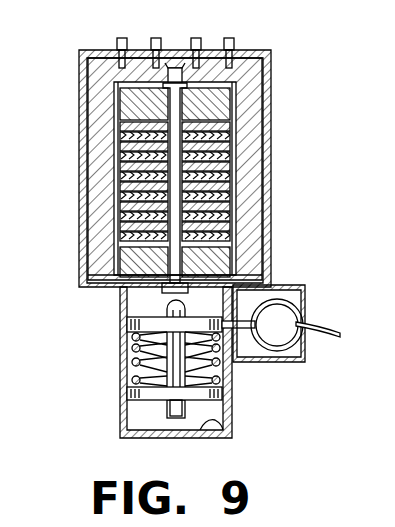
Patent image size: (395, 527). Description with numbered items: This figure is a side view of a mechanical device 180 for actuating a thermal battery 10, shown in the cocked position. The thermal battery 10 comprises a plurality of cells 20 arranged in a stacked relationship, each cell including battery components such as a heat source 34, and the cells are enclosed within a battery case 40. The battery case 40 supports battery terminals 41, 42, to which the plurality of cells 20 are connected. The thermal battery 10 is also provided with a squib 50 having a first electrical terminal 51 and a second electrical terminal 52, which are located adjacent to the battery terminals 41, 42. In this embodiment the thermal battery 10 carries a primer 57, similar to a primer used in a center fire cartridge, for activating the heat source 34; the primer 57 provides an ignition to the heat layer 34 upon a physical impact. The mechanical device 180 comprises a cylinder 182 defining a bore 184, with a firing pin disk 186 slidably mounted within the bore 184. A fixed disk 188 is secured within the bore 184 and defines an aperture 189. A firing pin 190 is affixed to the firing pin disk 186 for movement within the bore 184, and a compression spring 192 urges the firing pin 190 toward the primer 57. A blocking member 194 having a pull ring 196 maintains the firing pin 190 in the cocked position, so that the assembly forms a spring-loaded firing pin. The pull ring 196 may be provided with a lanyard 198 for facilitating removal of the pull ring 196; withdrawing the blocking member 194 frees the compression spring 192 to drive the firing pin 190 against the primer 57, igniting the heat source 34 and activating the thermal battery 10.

The thermal battery 10 is at (80, 63).
The plurality of cells 20 is at (78, 121).
The heat source 34 is at (78, 173).
The battery case 40 is at (82, 273).
The battery terminal 41 is at (231, 40).
The battery terminal 42 is at (121, 40).
The squib 50 is at (175, 63).
The first electrical terminal 51 is at (155, 40).
The second electrical terminal 52 is at (197, 40).
The primer 57 is at (168, 284).
The mechanical device 180 is at (288, 278).
The cylinder 182 is at (224, 405).
The bore 184 is at (225, 432).
The firing pin disk 186 is at (127, 325).
The fixed disk 188 is at (128, 393).
The aperture 189 is at (168, 397).
The firing pin 190 is at (165, 303).
The compression spring 192 is at (131, 359).
The blocking member 194 is at (242, 328).
The pull ring 196 is at (296, 340).
The lanyard 198 is at (330, 333).